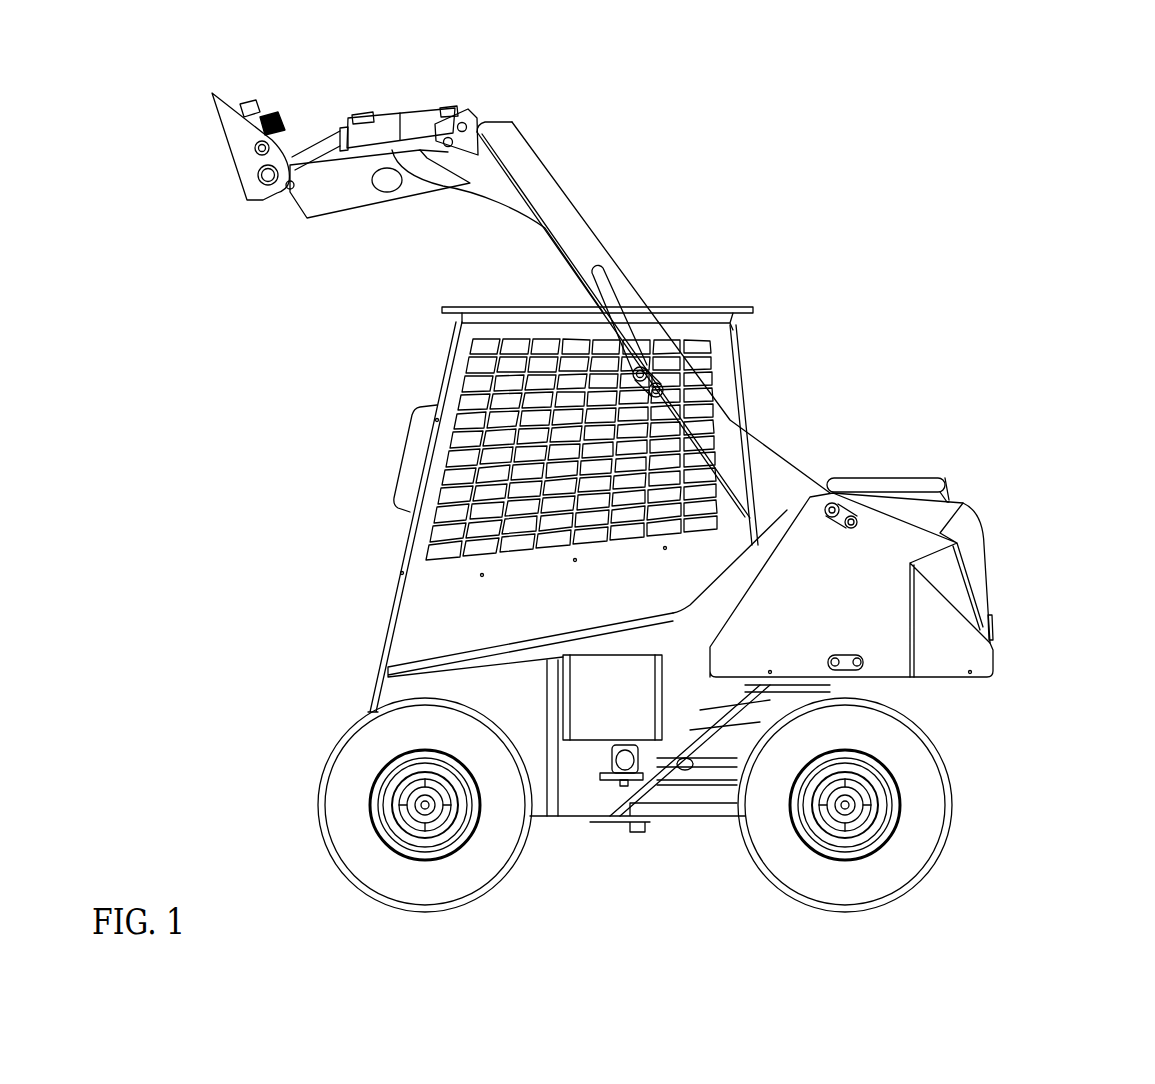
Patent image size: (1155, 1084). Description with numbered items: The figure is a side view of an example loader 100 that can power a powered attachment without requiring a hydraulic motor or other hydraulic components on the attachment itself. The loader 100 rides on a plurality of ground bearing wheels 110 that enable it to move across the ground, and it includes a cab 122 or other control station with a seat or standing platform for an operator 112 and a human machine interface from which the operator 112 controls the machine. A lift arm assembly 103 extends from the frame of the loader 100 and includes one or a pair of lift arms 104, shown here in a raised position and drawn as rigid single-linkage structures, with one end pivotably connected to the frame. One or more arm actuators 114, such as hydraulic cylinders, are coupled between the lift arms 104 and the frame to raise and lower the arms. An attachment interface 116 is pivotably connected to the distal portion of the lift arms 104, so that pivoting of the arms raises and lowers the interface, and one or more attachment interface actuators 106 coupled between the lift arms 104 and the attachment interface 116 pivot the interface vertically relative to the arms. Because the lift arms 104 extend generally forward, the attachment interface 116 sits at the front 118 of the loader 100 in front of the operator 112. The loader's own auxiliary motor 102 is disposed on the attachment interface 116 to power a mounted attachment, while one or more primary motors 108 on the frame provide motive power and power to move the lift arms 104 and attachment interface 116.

The loader 100 is at (980, 172).
The auxiliary motor 102 is at (283, 113).
The lift arm assembly 103 is at (626, 119).
The lift arm 104 is at (549, 162).
The attachment interface actuator 106 is at (399, 128).
The primary motor 108 is at (1040, 523).
The ground bearing wheels 110 is at (357, 753).
The operator 112 is at (693, 457).
The arm actuator 114 is at (757, 510).
The attachment interface 116 is at (237, 146).
The front 118 is at (287, 533).
The cab 122 is at (455, 380).